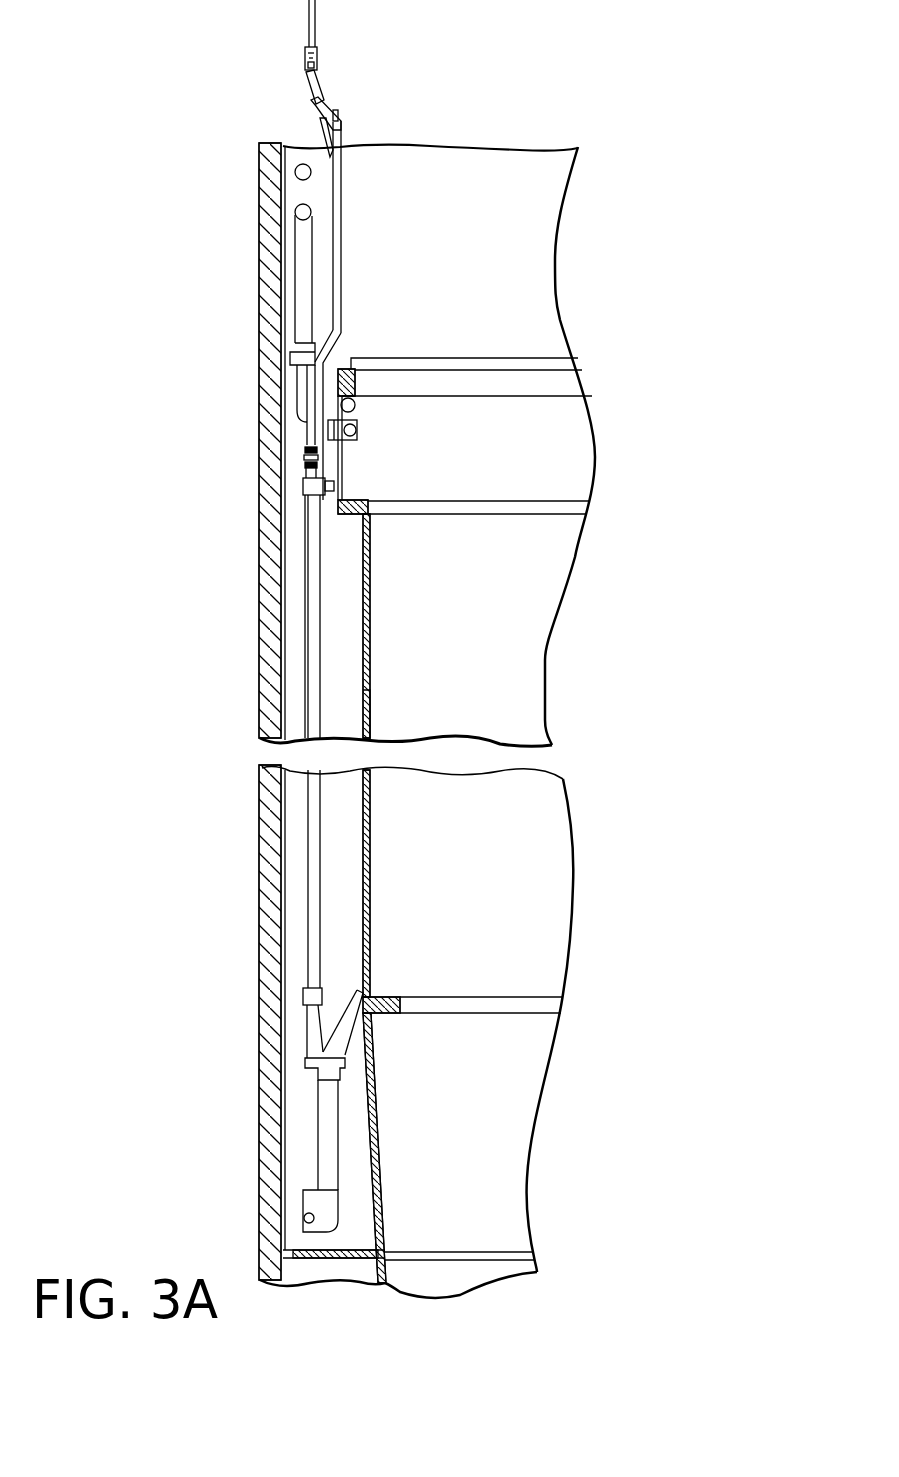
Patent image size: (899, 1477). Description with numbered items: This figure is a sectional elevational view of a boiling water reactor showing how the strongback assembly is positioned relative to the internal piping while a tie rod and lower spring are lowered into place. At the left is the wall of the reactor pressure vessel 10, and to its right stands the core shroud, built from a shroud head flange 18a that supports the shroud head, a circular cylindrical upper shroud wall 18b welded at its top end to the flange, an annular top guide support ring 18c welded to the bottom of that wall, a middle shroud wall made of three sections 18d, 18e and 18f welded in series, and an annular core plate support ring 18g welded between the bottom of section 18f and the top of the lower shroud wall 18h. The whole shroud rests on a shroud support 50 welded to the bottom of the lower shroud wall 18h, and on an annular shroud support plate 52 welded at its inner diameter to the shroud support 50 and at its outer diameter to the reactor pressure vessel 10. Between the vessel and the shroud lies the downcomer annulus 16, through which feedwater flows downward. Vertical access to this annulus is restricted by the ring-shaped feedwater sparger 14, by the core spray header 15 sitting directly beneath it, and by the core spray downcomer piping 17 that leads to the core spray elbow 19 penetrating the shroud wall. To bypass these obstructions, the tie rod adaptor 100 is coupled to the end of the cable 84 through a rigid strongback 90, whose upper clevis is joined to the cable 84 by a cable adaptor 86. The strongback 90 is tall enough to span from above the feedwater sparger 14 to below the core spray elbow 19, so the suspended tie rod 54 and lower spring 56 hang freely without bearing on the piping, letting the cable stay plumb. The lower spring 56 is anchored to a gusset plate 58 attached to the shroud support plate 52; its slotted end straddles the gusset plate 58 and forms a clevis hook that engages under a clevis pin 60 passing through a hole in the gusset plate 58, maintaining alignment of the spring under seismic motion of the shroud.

The reactor pressure vessel 10 is at (258, 700).
The feedwater sparger 14 is at (312, 172).
The core spray header 15 is at (313, 212).
The downcomer annulus 16 is at (351, 647).
The core spray downcomer piping 17 is at (300, 287).
The shroud head flange 18a is at (342, 368).
The upper shroud wall 18b is at (346, 448).
The top guide support ring 18c is at (354, 508).
The middle shroud wall section 18d is at (372, 572).
The middle shroud wall section 18e is at (372, 735).
The middle shroud wall section 18f is at (372, 850).
The core plate support ring 18g is at (380, 1000).
The lower shroud wall 18h is at (374, 1060).
The core spray elbow 19 is at (305, 428).
The shroud support 50 is at (382, 1217).
The shroud support plate 52 is at (300, 1260).
The tie rod 54 is at (306, 893).
The lower spring 56 is at (325, 1130).
The gusset plate 58 is at (347, 1230).
The clevis pin 60 is at (304, 1215).
The cable 84 is at (318, 22).
The cable adaptor 86 is at (317, 50).
The strongback 90 is at (345, 272).
The tie rod adaptor 100 is at (305, 492).